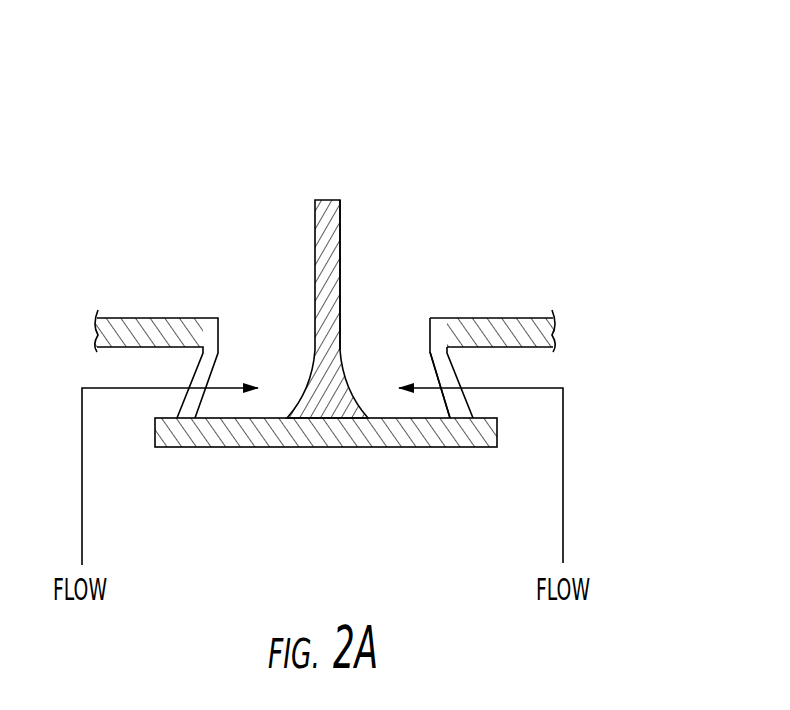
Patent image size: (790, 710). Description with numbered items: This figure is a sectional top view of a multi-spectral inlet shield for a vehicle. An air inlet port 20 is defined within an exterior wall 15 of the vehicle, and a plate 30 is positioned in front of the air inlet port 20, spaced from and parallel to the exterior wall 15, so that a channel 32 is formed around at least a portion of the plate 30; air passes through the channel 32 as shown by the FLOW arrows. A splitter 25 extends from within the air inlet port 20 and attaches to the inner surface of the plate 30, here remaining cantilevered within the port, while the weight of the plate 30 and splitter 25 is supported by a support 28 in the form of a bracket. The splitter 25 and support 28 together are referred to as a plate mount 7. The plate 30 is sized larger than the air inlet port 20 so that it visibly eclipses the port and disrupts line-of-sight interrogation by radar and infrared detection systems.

The plate mount 7 is at (317, 292).
The exterior wall 15 is at (575, 330).
The air inlet port 20 is at (397, 347).
The splitter 25 is at (344, 268).
The support 28 is at (449, 396).
The plate 30 is at (292, 448).
The channel 32 is at (525, 364).